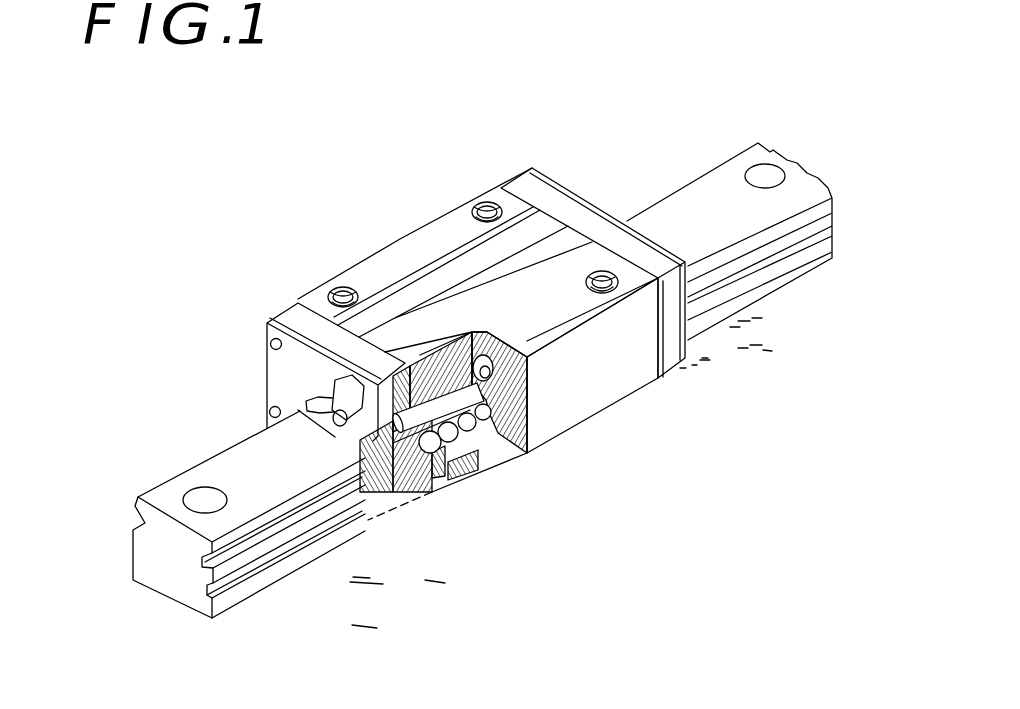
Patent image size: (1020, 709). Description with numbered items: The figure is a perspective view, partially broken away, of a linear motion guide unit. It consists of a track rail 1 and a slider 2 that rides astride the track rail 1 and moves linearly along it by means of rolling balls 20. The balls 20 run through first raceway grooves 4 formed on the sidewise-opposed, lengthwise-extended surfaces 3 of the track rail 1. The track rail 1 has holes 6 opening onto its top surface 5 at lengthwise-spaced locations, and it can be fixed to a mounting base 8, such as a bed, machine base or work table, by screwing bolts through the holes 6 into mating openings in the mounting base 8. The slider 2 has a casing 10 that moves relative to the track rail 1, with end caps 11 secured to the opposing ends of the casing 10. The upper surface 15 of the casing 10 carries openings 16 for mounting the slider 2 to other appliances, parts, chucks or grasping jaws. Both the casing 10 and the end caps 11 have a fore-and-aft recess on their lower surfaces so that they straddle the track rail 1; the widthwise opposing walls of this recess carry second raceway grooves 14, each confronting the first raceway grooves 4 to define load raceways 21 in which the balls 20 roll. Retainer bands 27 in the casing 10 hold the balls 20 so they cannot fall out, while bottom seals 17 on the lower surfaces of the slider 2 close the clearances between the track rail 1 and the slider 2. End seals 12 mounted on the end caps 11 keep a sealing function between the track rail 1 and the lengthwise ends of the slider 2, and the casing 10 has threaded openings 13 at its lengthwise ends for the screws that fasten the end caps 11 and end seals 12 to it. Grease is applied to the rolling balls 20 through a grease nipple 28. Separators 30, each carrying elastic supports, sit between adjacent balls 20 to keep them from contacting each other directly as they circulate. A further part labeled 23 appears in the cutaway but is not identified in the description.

The track rail 1 is at (194, 453).
The slider 2 is at (388, 236).
The lengthwise-extended surfaces 3 is at (263, 569).
The first raceway grooves 4 is at (136, 522).
The top surface 5 is at (192, 478).
The holes 6 is at (178, 482).
The mounting base 8 is at (412, 625).
The casing 10 is at (599, 397).
The end caps 11 is at (293, 318).
The end seals 12 is at (283, 379).
The threaded openings 13 is at (270, 343).
The second raceway grooves 14 is at (492, 409).
The upper surface 15 is at (437, 228).
The openings 16 is at (340, 288).
The bottom seals 17 is at (487, 465).
The balls 20 is at (488, 460).
The load raceways 21 is at (468, 455).
The lubricant supply hole 23 is at (494, 370).
The retainer bands 27 is at (436, 458).
The grease nipple 28 is at (347, 430).
The separators 30 is at (462, 434).